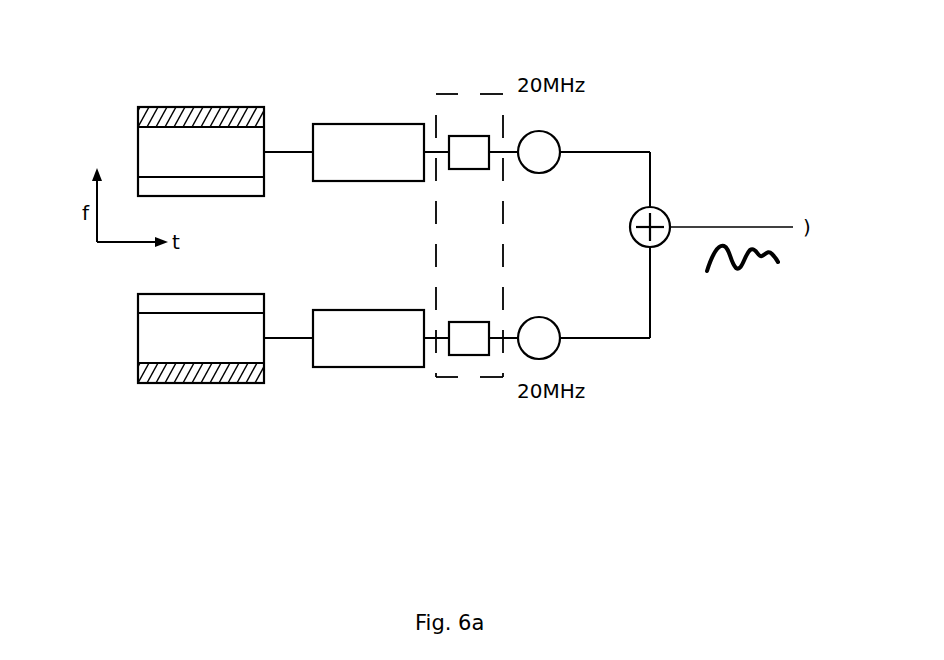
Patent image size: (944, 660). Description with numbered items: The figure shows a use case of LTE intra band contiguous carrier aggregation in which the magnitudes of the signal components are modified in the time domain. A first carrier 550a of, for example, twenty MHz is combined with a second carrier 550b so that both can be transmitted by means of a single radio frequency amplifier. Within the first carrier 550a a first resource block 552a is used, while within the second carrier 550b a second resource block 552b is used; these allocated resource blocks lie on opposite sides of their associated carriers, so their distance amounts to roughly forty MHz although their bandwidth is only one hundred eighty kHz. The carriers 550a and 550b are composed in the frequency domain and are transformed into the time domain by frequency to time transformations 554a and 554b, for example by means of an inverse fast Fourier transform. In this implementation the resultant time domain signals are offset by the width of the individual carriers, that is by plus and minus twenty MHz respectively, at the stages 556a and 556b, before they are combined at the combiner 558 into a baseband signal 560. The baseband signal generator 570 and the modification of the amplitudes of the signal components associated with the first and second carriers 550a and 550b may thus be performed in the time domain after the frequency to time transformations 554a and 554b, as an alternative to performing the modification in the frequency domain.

The first carrier 550a is at (138, 132).
The second carrier 550b is at (138, 355).
The first resource block 552a is at (221, 110).
The second resource block 552b is at (221, 378).
The frequency to time transformation 554a is at (365, 124).
The frequency to time transformation 554b is at (370, 367).
The first mixer / up-converter (20 MHz) 556a is at (556, 138).
The second mixer / up-converter (20 MHz) 556b is at (556, 352).
The adder / combiner 558 is at (664, 211).
The baseband signal 560 is at (759, 263).
The baseband signal generator 570 is at (483, 94).